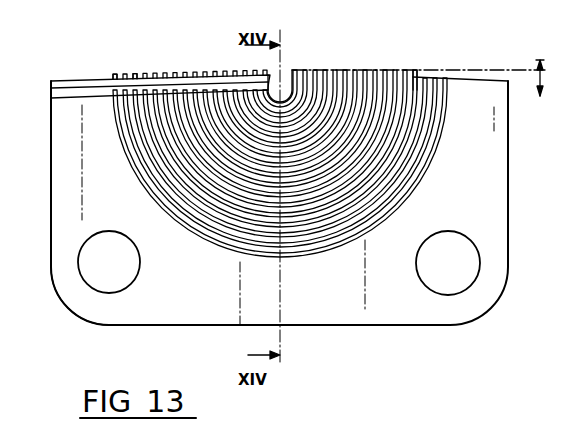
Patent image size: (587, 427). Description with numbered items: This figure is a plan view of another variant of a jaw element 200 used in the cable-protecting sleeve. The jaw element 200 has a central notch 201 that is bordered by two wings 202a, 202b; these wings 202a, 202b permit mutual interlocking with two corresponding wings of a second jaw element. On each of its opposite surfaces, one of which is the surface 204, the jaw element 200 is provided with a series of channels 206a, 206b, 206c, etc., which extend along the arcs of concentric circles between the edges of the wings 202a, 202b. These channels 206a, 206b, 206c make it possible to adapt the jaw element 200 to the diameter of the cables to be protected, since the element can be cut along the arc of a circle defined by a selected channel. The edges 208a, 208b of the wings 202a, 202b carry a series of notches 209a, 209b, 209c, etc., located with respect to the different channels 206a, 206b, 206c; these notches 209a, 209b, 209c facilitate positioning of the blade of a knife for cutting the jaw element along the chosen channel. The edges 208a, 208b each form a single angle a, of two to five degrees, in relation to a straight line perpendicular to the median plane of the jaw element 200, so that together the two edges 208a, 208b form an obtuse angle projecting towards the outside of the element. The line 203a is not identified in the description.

The jaw element 200 is at (486, 226).
The notch 201 is at (268, 95).
The wing 202a is at (80, 113).
The wing 202b is at (490, 97).
The intermediate wall layer 203a is at (170, 85).
The surface 204 is at (82, 222).
The channel 206a is at (452, 80).
The channel 206b is at (435, 97).
The channel 206c is at (413, 95).
The edge of wing 208a is at (82, 79).
The edge of wing 208b is at (493, 79).
The notch 209a is at (116, 74).
The notch 209b is at (127, 74).
The notch 209c is at (137, 74).
The angle a is at (546, 78).